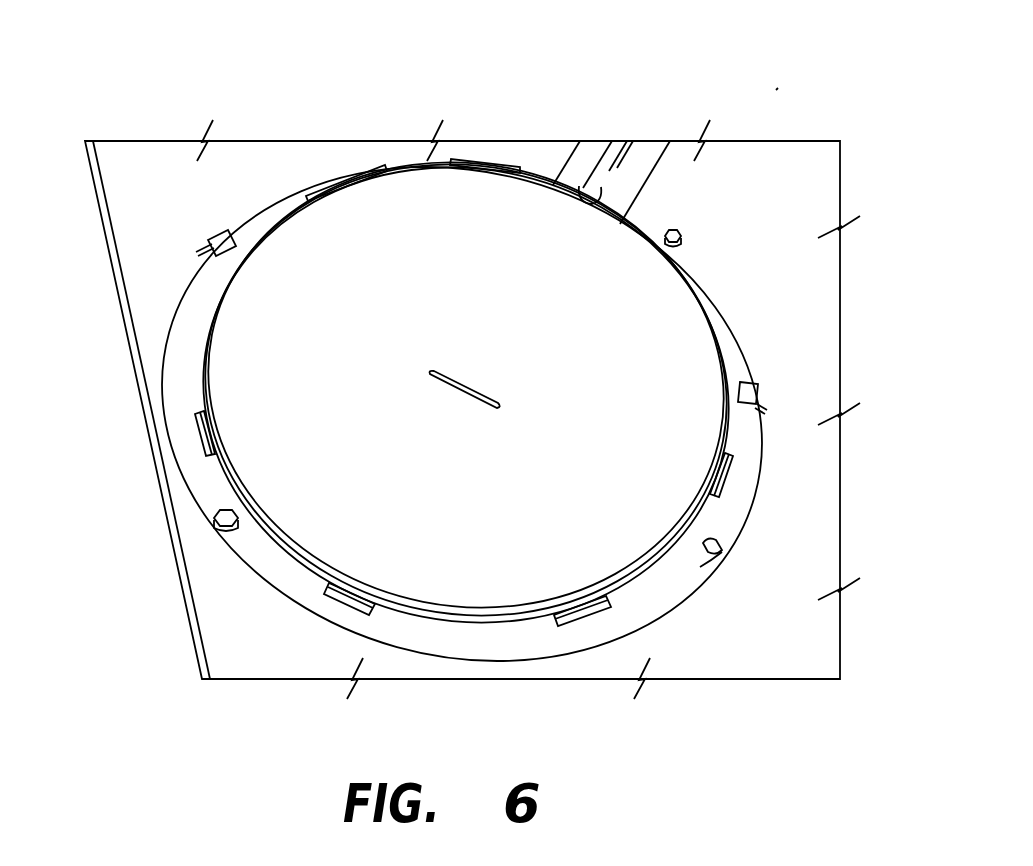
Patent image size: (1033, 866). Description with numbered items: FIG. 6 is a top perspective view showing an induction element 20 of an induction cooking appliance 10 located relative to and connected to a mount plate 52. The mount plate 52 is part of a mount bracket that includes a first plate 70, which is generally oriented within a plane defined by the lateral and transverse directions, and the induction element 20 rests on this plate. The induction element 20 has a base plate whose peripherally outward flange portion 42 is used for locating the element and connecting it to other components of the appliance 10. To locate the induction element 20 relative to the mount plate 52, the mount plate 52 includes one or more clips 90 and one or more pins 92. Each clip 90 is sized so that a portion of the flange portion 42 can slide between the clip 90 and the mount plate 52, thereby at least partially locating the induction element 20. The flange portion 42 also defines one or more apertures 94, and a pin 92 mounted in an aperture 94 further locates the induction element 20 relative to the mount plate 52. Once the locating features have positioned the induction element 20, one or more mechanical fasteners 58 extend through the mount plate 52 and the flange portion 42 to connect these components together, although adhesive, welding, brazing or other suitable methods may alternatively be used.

The induction cooking appliance 10 is at (812, 46).
The induction element 20 is at (500, 207).
The flange portion 42 is at (298, 200).
The mount plate 52 is at (190, 187).
The mechanical fastener 58 is at (212, 520).
The first plate 70 is at (140, 163).
The clip 90 is at (212, 242).
The pin 92 is at (712, 547).
The aperture 94 is at (720, 553).